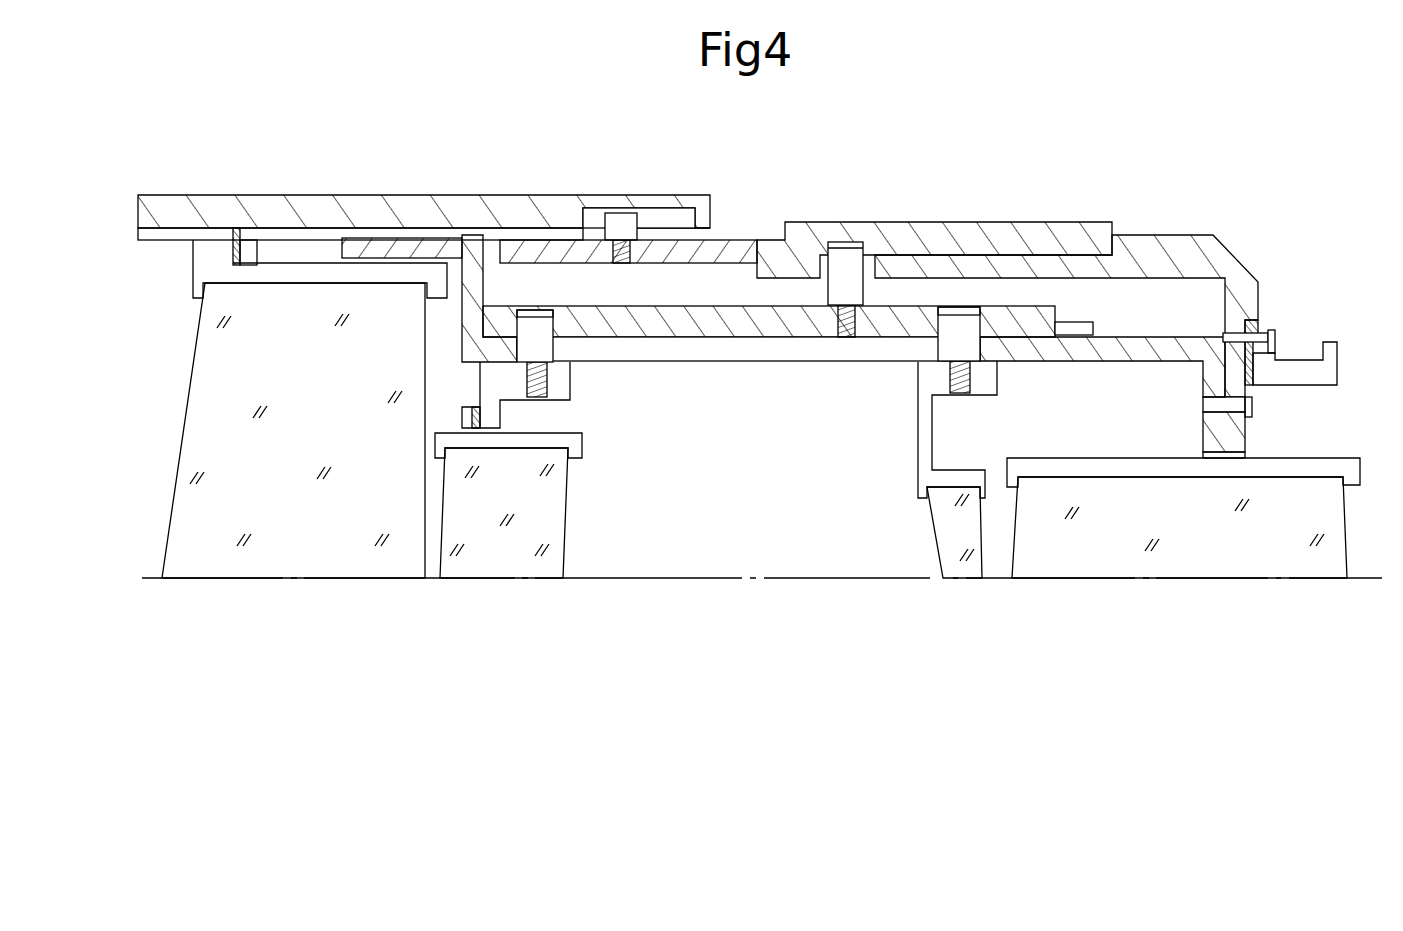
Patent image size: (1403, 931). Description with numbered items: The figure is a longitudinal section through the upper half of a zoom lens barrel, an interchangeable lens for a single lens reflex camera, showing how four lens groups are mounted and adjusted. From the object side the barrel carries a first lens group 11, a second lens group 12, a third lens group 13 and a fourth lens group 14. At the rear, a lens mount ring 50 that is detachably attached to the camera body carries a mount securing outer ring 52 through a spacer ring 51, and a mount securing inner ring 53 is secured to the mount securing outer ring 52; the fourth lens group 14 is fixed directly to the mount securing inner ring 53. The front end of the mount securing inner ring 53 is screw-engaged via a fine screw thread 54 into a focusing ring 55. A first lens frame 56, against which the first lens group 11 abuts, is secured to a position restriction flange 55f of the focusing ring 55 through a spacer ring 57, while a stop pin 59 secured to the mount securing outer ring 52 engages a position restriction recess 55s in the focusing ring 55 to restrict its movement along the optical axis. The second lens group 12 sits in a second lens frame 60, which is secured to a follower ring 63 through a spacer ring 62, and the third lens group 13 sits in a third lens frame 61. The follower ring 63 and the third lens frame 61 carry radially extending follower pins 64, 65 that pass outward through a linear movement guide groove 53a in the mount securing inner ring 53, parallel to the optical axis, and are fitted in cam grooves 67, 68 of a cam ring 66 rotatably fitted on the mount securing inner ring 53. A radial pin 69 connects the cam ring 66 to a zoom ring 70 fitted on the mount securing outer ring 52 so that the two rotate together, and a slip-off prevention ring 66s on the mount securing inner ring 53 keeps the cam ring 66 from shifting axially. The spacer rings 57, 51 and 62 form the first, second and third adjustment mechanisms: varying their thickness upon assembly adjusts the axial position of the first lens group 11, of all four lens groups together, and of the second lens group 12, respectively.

The first lens group 11 is at (381, 577).
The second lens group 12 is at (470, 578).
The third lens group 13 is at (968, 577).
The fourth lens group 14 is at (1146, 577).
The lens mount ring 50 is at (1328, 362).
The spacer ring 51 is at (1258, 320).
The mount securing outer ring 52 is at (1216, 248).
The mount securing inner ring 53 is at (1100, 362).
The linear movement guide groove 53a is at (826, 356).
The fine screw thread 54 is at (400, 243).
The focusing ring 55 is at (318, 212).
The position restriction flange 55f is at (258, 255).
The position restriction recess 55s is at (668, 213).
The first lens frame 56 is at (203, 268).
The spacer ring 57 is at (247, 230).
The stop pin 59 is at (622, 212).
The second lens frame 60 is at (574, 440).
The third lens frame 61 is at (925, 443).
The spacer ring 62 is at (478, 405).
The follower ring 63 is at (488, 415).
The follower pin 64 is at (548, 323).
The follower pin 65 is at (968, 325).
The cam ring 66 is at (690, 314).
The slip-off prevention ring 66s is at (1100, 322).
The cam groove 67 is at (526, 322).
The cam groove 68 is at (958, 308).
The radial pin 69 is at (850, 243).
The zoom ring 70 is at (1073, 238).